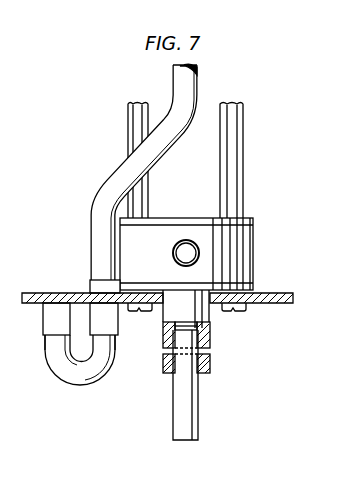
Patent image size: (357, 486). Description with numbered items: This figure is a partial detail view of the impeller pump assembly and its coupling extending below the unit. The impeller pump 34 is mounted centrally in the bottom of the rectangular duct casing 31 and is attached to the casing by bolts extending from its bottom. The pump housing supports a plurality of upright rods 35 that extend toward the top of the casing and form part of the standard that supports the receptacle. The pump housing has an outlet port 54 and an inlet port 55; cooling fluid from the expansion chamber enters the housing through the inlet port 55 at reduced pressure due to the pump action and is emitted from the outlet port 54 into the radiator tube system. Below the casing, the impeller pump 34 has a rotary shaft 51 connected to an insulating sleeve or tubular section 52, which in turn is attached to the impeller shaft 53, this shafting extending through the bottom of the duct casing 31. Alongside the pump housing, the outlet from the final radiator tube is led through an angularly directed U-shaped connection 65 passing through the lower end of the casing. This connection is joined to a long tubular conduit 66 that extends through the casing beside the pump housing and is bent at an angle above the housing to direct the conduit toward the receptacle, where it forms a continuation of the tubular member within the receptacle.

The duct casing 31 is at (263, 293).
The impeller pump 34 is at (253, 250).
The upright rods 35 is at (128, 117).
The rotary shaft 51 is at (198, 403).
The insulating sleeve 52 is at (212, 343).
The impeller shaft 53 is at (178, 318).
The outlet port 54 is at (186, 257).
The inlet port 55 is at (175, 247).
The U-shaped connection 65 is at (58, 370).
The tubular conduit 66 is at (110, 180).